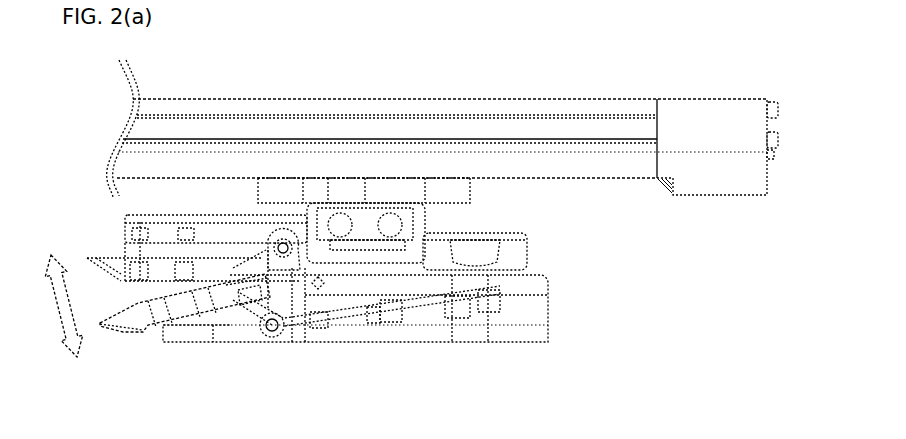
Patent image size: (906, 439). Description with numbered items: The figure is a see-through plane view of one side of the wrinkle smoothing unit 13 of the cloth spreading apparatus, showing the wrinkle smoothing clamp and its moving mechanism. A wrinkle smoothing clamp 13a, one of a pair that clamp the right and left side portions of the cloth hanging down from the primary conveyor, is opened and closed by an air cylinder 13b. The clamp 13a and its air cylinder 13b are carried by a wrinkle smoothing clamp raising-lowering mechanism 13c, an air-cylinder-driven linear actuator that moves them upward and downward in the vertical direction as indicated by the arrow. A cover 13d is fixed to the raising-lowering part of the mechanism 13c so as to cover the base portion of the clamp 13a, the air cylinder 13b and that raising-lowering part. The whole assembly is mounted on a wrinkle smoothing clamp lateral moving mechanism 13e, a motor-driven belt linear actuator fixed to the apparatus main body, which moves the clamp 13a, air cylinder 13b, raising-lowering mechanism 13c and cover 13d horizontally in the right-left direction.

The wrinkle smoothing unit 13 is at (565, 259).
The wrinkle smoothing clamp 13a is at (155, 333).
The air cylinder 13b is at (413, 331).
The wrinkle smoothing clamp raising-lowering mechanism 13c is at (420, 213).
The cover 13d is at (490, 343).
The wrinkle smoothing clamp lateral moving mechanism 13e is at (572, 179).